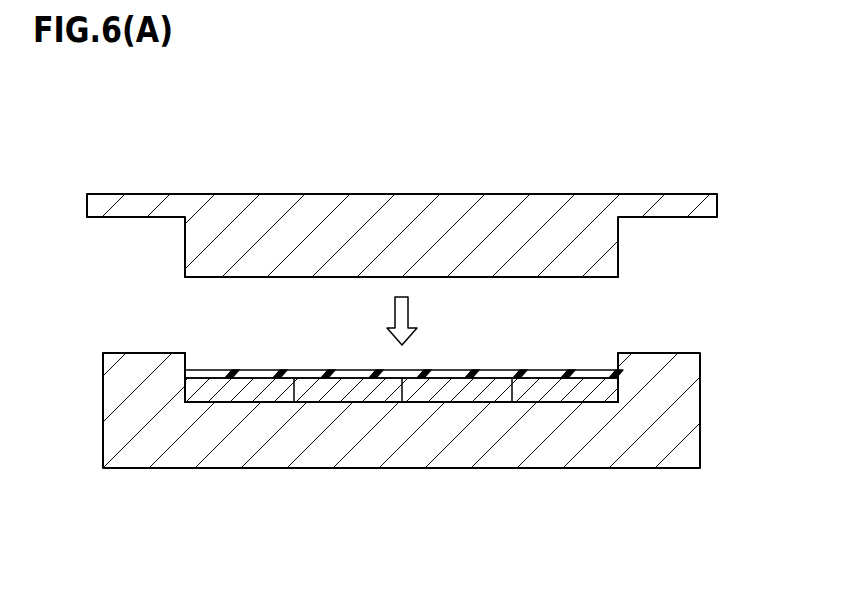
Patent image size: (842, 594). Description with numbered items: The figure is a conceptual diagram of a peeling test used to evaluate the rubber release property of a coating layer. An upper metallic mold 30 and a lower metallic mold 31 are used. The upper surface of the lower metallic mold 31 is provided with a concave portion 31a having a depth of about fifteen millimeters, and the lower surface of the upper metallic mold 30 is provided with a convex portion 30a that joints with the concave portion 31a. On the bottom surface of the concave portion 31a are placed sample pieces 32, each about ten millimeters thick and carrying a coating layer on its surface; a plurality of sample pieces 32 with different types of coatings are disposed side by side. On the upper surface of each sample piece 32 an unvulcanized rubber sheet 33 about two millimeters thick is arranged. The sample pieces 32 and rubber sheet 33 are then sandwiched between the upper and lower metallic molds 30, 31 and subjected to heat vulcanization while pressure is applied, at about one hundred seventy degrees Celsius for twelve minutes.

The upper metallic mold 30 is at (508, 193).
The convex portion 30a is at (577, 277).
The lower metallic mold 31 is at (682, 407).
The concave portion 31a is at (587, 390).
The sample piece 32 is at (242, 390).
The unvulcanized rubber sheet 33 is at (217, 368).